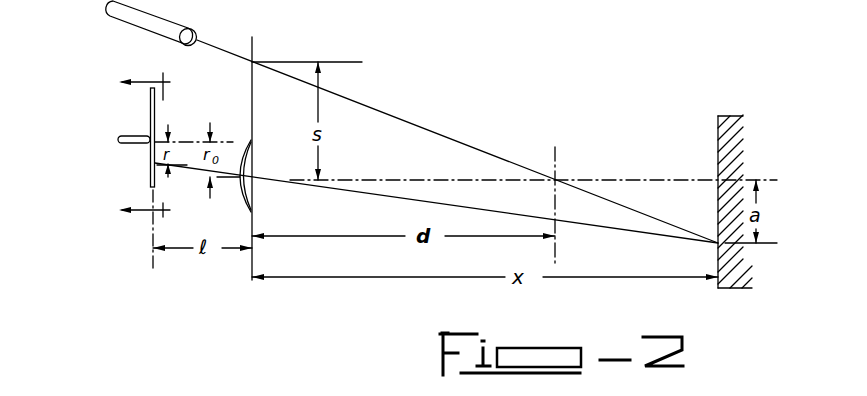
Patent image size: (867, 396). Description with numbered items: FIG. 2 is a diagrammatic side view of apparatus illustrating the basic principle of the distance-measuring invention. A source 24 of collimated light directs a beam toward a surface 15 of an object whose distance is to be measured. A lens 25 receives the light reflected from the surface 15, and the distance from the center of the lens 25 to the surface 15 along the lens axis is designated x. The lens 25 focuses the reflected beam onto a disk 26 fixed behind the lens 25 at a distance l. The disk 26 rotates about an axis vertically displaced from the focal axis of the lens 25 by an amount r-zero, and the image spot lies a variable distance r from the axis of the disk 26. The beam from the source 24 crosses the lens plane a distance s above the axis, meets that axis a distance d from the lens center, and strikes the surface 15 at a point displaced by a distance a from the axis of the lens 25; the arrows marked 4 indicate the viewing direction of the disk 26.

The source of collimated light 24 is at (146, 22).
The disk 26 is at (150, 125).
The view direction arrows (FIG. 4) 4 is at (133, 147).
The lens 25 is at (254, 190).
The surface 15 is at (718, 150).